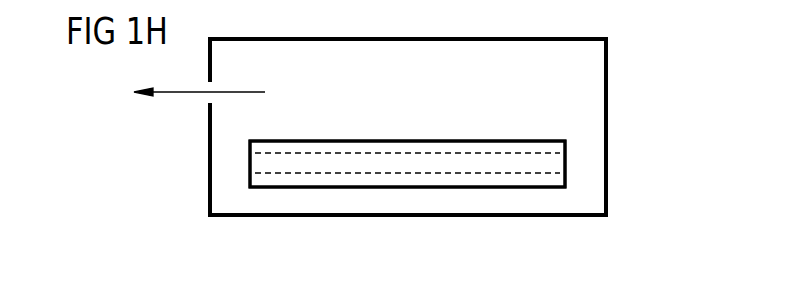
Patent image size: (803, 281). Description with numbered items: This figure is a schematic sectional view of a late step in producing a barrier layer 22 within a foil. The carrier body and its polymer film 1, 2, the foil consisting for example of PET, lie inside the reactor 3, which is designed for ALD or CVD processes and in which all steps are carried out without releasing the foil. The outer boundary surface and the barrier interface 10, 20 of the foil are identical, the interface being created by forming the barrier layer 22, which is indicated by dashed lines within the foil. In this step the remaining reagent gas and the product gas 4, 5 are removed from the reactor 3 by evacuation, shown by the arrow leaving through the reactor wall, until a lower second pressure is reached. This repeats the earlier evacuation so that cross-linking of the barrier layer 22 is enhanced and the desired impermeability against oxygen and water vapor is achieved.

The sensor / device 1, 2 is at (553, 164).
The reactor 3 is at (608, 122).
The light / signal emission 4, 5 is at (184, 93).
The substrate / body 10, 20 is at (350, 141).
The barrier layer 22 is at (428, 150).